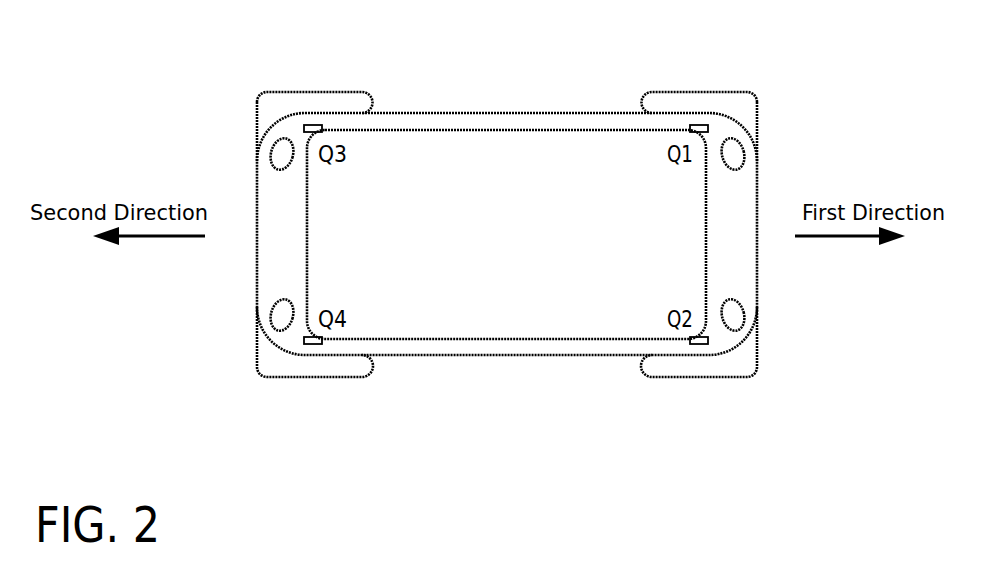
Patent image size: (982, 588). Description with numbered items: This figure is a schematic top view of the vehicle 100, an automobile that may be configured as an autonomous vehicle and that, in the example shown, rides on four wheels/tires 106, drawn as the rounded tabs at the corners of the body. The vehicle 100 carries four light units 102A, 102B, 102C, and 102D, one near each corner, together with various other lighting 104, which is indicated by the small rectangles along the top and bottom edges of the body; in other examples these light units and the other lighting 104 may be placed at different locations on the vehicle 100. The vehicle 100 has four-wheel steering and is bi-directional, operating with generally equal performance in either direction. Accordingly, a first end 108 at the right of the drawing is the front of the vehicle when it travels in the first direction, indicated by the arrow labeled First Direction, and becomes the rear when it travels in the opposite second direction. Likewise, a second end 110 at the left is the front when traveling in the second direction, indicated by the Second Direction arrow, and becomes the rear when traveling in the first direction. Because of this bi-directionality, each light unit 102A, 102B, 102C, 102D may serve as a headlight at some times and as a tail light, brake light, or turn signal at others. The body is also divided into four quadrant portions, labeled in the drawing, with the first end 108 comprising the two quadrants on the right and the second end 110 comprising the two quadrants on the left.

The vehicle 100 is at (527, 224).
The light unit 102A is at (742, 304).
The light unit 102B is at (745, 151).
The light unit 102C is at (274, 304).
The light unit 102D is at (271, 151).
The other lighting 104 is at (313, 126).
The wheels/tires 106 is at (343, 93).
The first end 108 is at (760, 292).
The second end 110 is at (255, 288).